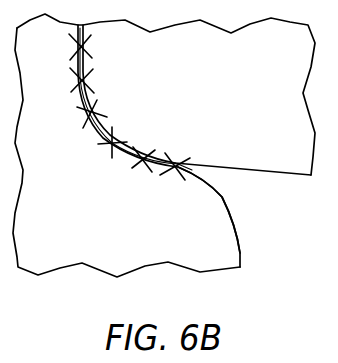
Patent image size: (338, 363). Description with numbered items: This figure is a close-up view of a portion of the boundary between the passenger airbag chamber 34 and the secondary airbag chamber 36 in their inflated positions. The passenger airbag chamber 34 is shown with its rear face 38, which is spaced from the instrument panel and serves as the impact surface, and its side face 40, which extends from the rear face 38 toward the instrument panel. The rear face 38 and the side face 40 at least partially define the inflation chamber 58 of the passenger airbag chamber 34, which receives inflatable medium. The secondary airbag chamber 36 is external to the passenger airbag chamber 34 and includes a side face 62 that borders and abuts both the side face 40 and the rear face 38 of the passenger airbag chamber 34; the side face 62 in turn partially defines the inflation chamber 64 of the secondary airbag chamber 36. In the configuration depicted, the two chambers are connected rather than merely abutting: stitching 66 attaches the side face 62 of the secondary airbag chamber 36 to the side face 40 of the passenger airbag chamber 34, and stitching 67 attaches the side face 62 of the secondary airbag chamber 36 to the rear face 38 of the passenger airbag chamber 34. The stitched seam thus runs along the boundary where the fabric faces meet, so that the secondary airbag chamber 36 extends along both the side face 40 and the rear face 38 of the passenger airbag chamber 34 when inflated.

The passenger airbag chamber 34 is at (275, 182).
The secondary airbag chamber 36 is at (249, 246).
The rear face 38 is at (256, 172).
The side face 40 is at (92, 98).
The inflation chamber 58 is at (226, 84).
The side face 62 is at (124, 148).
The inflation chamber 64 is at (172, 239).
The stitching 66 is at (72, 72).
The stitching 67 is at (148, 156).